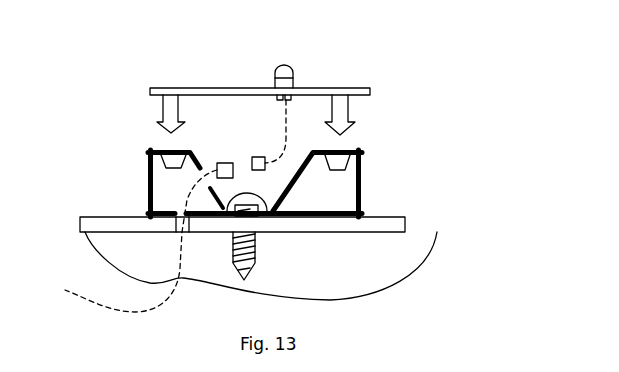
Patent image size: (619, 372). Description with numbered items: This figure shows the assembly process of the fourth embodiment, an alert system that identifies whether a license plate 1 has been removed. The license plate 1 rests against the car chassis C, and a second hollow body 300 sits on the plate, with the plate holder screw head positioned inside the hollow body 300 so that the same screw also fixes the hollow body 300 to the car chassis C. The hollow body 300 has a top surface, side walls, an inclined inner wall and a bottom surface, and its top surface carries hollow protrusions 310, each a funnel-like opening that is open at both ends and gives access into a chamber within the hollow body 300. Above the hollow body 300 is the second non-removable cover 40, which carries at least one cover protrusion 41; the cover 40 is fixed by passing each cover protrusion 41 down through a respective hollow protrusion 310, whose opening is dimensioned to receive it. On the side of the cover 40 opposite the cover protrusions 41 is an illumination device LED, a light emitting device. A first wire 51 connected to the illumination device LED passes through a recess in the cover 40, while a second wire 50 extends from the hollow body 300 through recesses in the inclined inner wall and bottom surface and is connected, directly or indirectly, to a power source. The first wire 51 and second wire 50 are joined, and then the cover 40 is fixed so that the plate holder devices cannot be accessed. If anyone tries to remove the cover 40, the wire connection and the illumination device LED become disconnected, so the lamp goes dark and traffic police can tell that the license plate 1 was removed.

The license plate 1 is at (390, 224).
The second non-removable cover 40 is at (370, 87).
The cover protrusion 41 is at (355, 125).
The second wire 50 is at (225, 163).
The first wire 51 is at (259, 157).
The second hollow body 300 is at (362, 188).
The hollow protrusion 310 is at (175, 163).
The illumination device LED is at (286, 64).
The car chassis C is at (340, 273).